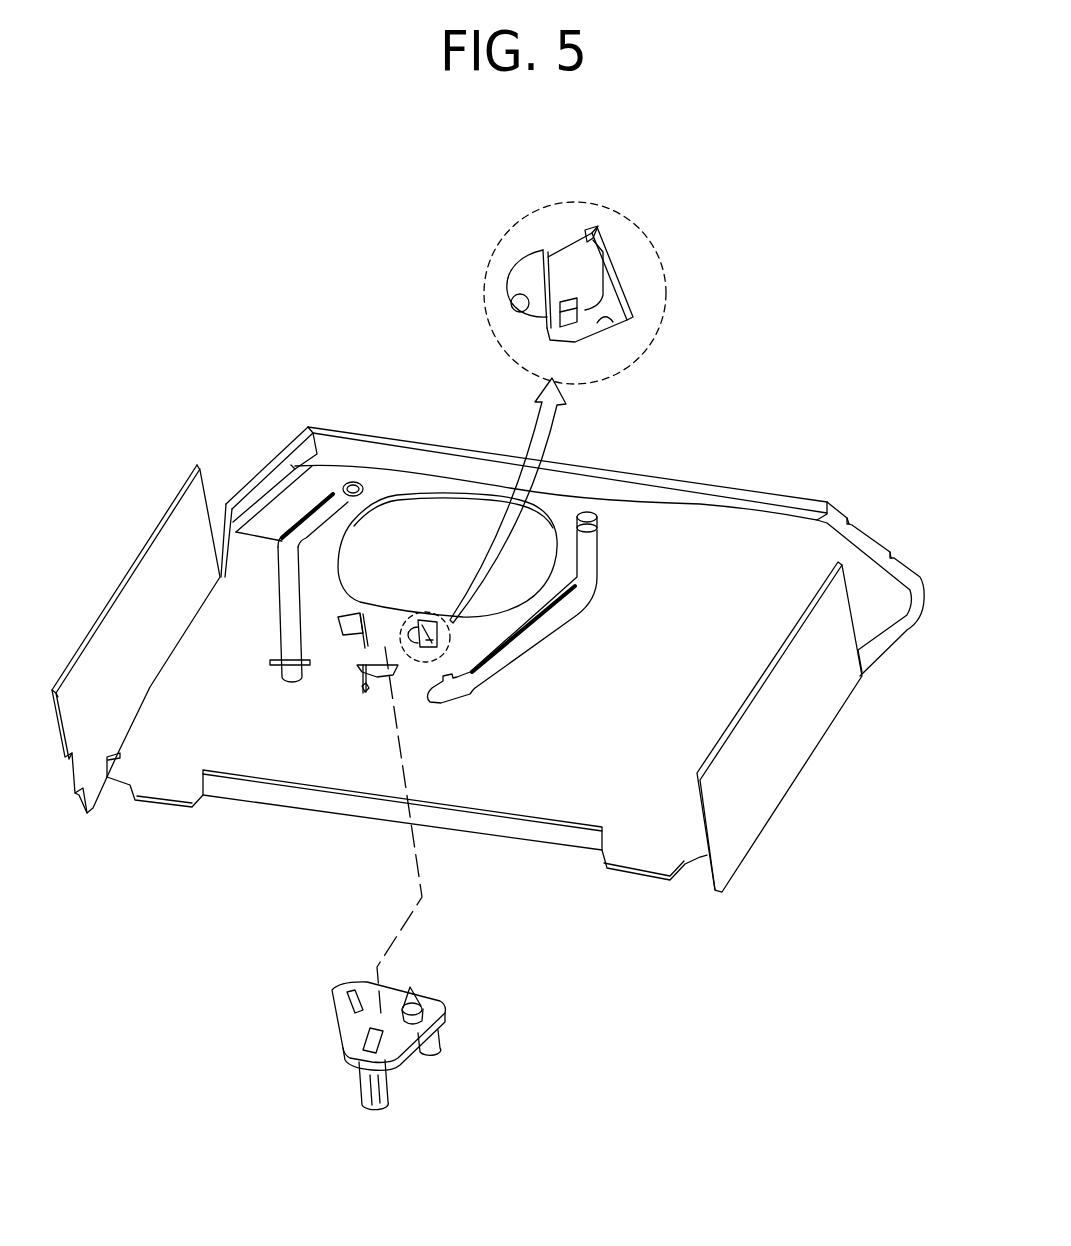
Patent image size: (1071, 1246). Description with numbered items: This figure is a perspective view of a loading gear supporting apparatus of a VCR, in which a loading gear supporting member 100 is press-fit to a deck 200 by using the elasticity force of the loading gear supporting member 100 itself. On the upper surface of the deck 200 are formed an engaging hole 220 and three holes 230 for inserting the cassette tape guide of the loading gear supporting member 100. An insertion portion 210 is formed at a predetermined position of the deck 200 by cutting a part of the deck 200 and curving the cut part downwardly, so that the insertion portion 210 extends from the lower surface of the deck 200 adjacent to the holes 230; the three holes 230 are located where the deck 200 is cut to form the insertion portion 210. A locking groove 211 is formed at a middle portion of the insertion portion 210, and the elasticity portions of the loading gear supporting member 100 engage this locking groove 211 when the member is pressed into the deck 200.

The loading gear supporting member 100 is at (467, 1025).
The deck 200 is at (648, 291).
The insertion portion 210 is at (545, 280).
The locking groove 211 is at (613, 253).
The engaging hole 220 is at (545, 317).
The holes 230 is at (613, 325).